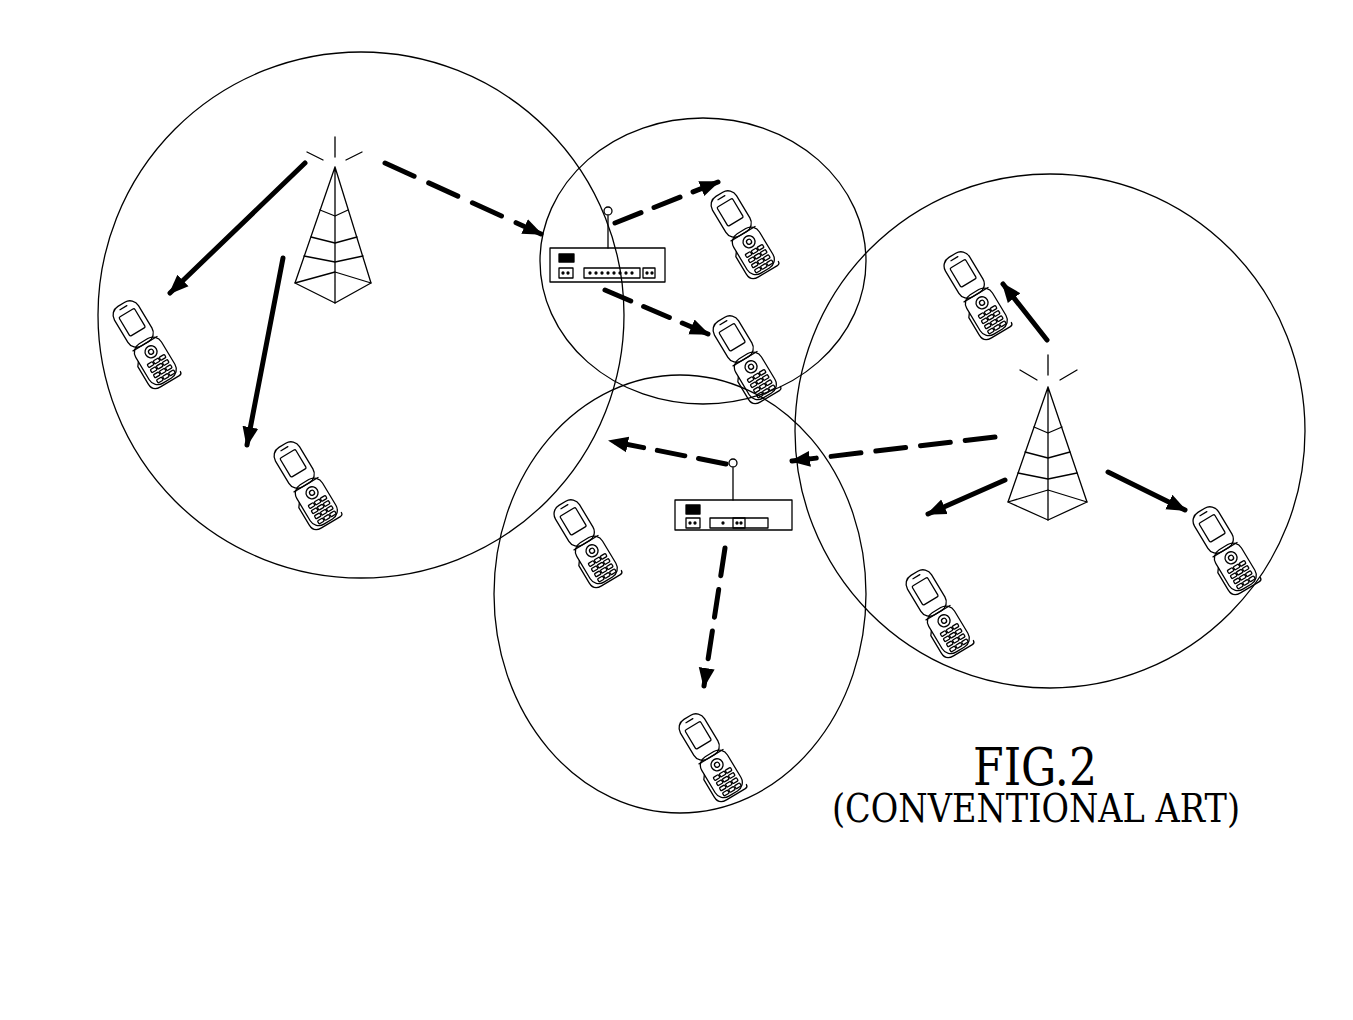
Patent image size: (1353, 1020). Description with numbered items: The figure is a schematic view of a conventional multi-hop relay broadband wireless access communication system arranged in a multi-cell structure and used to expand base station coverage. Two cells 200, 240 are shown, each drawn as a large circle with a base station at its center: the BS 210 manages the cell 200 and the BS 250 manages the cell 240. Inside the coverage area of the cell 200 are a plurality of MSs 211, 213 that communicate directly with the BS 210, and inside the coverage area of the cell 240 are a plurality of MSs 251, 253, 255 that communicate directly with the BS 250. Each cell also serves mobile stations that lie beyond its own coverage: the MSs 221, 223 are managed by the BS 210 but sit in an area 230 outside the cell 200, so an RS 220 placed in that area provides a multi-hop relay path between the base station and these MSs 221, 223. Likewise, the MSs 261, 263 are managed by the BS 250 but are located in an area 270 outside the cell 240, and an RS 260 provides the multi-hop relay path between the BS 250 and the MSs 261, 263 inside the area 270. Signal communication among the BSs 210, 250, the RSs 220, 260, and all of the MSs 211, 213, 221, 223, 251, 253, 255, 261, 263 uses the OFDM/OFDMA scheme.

The cell 200 is at (361, 315).
The BS 210 is at (366, 260).
The MS 211 is at (134, 306).
The MS 213 is at (302, 448).
The RS 220 is at (582, 283).
The MS 221 is at (744, 331).
The MS 223 is at (737, 196).
The area 230 is at (703, 261).
The cell 240 is at (1050, 431).
The BS 250 is at (1068, 440).
The MS 251 is at (963, 254).
The MS 253 is at (1212, 510).
The MS 255 is at (925, 573).
The RS 260 is at (685, 531).
The MS 261 is at (584, 503).
The MS 263 is at (710, 719).
The area 270 is at (680, 594).